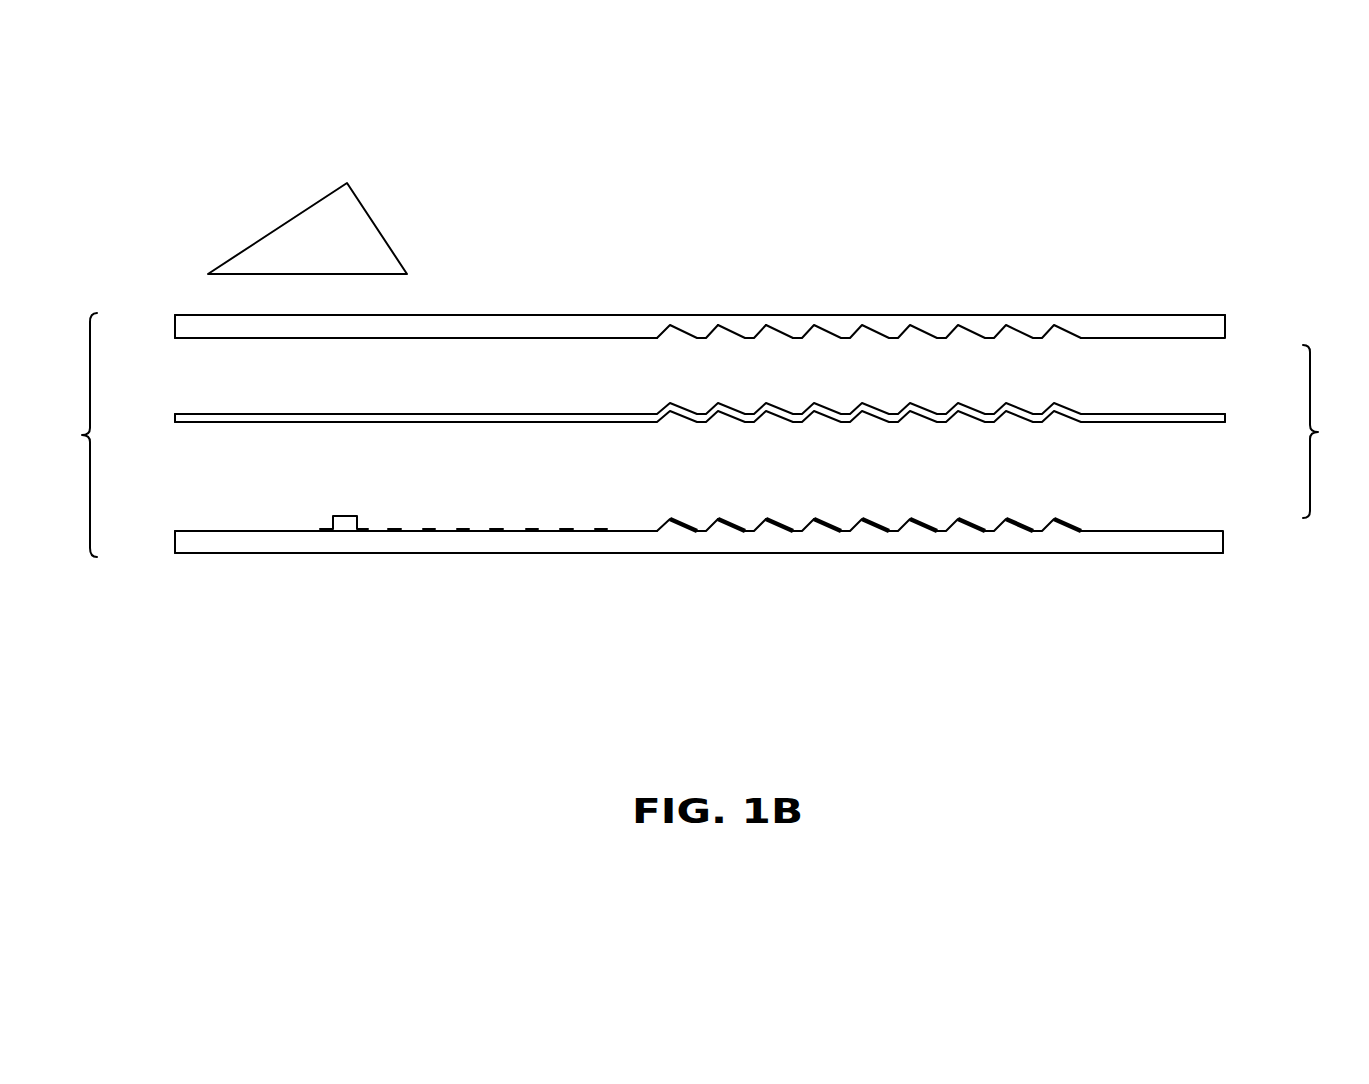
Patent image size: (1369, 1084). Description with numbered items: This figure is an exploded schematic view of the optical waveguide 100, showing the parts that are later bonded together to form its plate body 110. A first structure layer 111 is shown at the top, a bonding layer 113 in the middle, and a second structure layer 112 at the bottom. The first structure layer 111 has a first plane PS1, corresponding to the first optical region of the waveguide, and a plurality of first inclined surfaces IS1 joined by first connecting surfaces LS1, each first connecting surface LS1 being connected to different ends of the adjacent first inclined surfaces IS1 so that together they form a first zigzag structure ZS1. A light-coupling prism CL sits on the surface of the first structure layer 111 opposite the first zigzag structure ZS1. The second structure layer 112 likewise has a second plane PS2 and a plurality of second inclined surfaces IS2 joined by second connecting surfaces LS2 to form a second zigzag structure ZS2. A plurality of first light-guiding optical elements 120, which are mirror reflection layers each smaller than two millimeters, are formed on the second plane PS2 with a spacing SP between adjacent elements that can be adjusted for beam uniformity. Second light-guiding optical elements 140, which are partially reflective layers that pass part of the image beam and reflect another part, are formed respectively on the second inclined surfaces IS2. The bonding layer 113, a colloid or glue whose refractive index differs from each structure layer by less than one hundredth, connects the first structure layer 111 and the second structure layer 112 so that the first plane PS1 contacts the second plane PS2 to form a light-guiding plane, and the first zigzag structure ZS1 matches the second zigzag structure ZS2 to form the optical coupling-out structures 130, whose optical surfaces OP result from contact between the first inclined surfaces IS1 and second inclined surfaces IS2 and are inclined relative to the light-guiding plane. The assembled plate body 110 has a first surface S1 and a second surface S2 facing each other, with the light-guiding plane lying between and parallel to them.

The optical waveguide 100 is at (1354, 661).
The plate body 110 is at (71, 435).
The first structure layer 111 is at (178, 323).
The second structure layer 112 is at (178, 541).
The bonding layer 113 is at (178, 416).
The first light-guiding optical elements 120 is at (463, 531).
The optical coupling-out structures 130 is at (1330, 431).
The second light-guiding optical elements 140 is at (1095, 518).
The light-coupling prism CL is at (318, 218).
The first plane PS1 is at (313, 339).
The second plane PS2 is at (313, 529).
The spacing SP is at (350, 523).
The first connecting surfaces LS1 is at (718, 326).
The second connecting surfaces LS2 is at (716, 517).
The first inclined surfaces IS1 is at (780, 332).
The second inclined surfaces IS2 is at (728, 522).
The optical surfaces OP is at (825, 522).
The first zigzag structure ZS1 is at (962, 318).
The second zigzag structure ZS2 is at (957, 488).
The first surface S1 is at (1177, 314).
The second surface S2 is at (1175, 553).